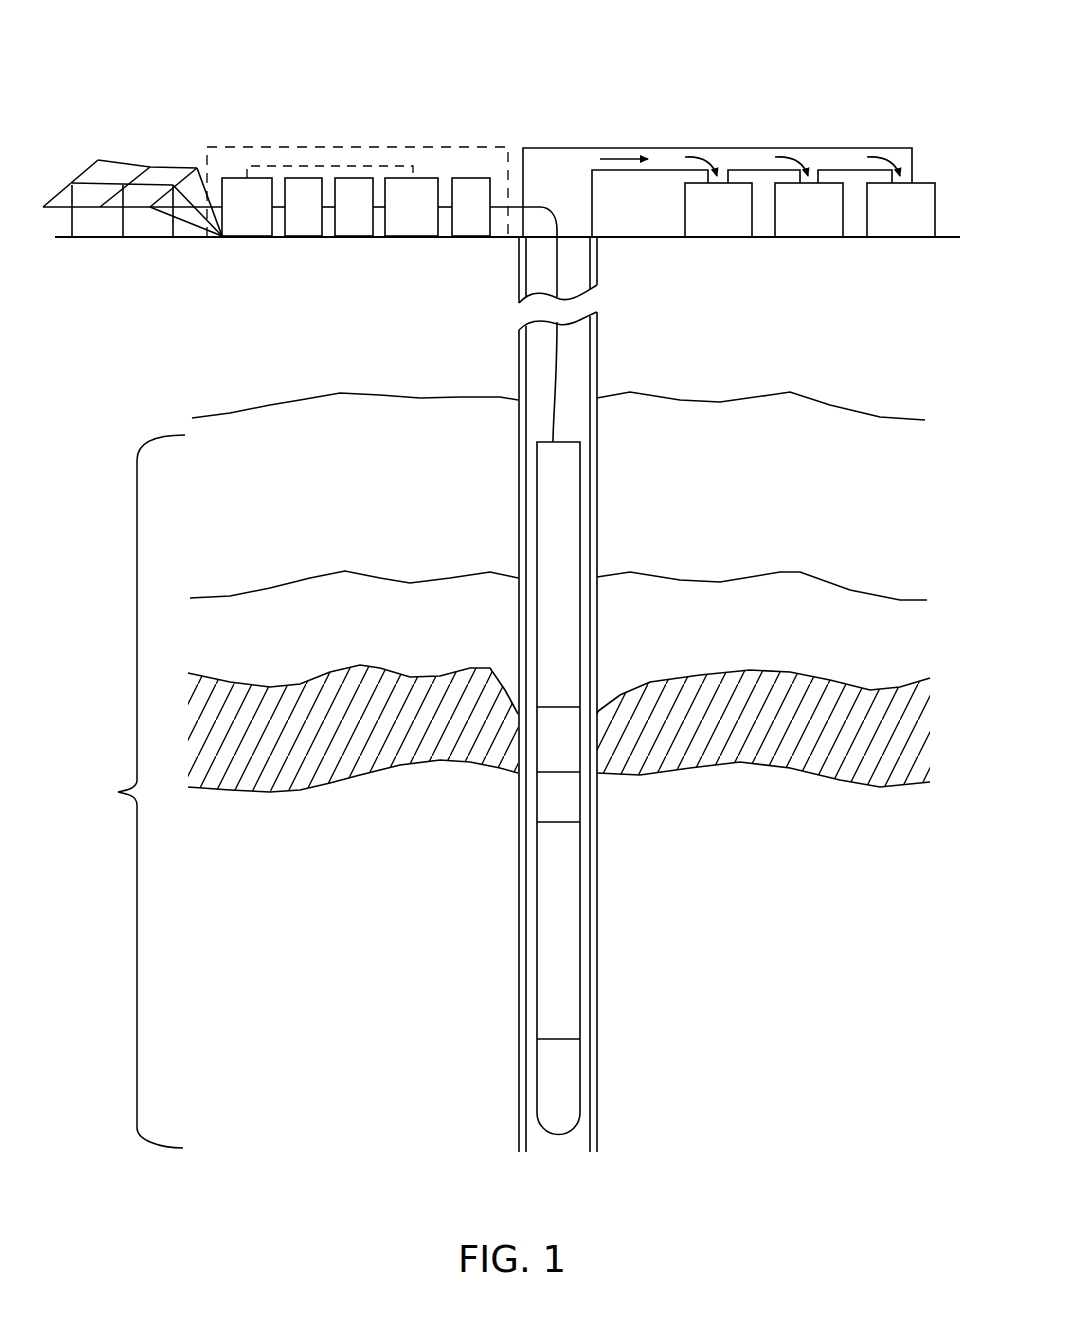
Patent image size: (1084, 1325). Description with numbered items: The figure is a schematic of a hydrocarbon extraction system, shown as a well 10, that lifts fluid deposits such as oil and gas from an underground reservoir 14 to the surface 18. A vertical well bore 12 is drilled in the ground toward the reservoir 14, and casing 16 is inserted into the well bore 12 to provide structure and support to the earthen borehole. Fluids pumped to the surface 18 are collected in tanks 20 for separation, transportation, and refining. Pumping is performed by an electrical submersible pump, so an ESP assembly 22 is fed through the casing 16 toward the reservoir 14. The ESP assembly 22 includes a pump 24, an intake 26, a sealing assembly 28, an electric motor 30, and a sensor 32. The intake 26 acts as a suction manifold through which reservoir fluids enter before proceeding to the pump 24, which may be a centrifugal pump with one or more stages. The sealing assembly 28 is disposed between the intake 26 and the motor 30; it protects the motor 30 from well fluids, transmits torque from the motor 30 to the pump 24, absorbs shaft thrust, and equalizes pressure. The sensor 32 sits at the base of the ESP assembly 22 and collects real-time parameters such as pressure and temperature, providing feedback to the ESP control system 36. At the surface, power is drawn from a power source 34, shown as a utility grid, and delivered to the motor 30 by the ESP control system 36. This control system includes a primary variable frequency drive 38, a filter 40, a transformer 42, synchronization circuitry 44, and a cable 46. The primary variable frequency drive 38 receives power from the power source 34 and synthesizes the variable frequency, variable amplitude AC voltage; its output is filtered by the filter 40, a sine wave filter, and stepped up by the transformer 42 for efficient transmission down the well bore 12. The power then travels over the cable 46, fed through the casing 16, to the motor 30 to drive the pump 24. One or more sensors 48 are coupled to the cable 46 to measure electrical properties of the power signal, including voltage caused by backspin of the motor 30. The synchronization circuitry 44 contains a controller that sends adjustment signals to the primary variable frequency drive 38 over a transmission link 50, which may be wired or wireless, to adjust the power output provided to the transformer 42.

The well 10 is at (697, 53).
The well bore 12 is at (586, 405).
The reservoir 14 is at (437, 724).
The casing 16 is at (518, 355).
The surface 18 is at (631, 235).
The tanks 20 is at (715, 240).
The ESP assembly 22 is at (118, 792).
The pump 24 is at (597, 480).
The intake 26 is at (520, 738).
The sealing assembly 28 is at (535, 795).
The electric motor 30 is at (597, 897).
The sensor 32 is at (580, 1077).
The power source 34 is at (157, 134).
The ESP control system 36 is at (425, 145).
The primary variable frequency drive 38 is at (237, 225).
The filter 40 is at (303, 188).
The transformer 42 is at (355, 188).
The synchronization circuitry 44 is at (413, 215).
The cable 46 is at (557, 200).
The sensors 48 is at (468, 188).
The transmission link 50 is at (268, 163).